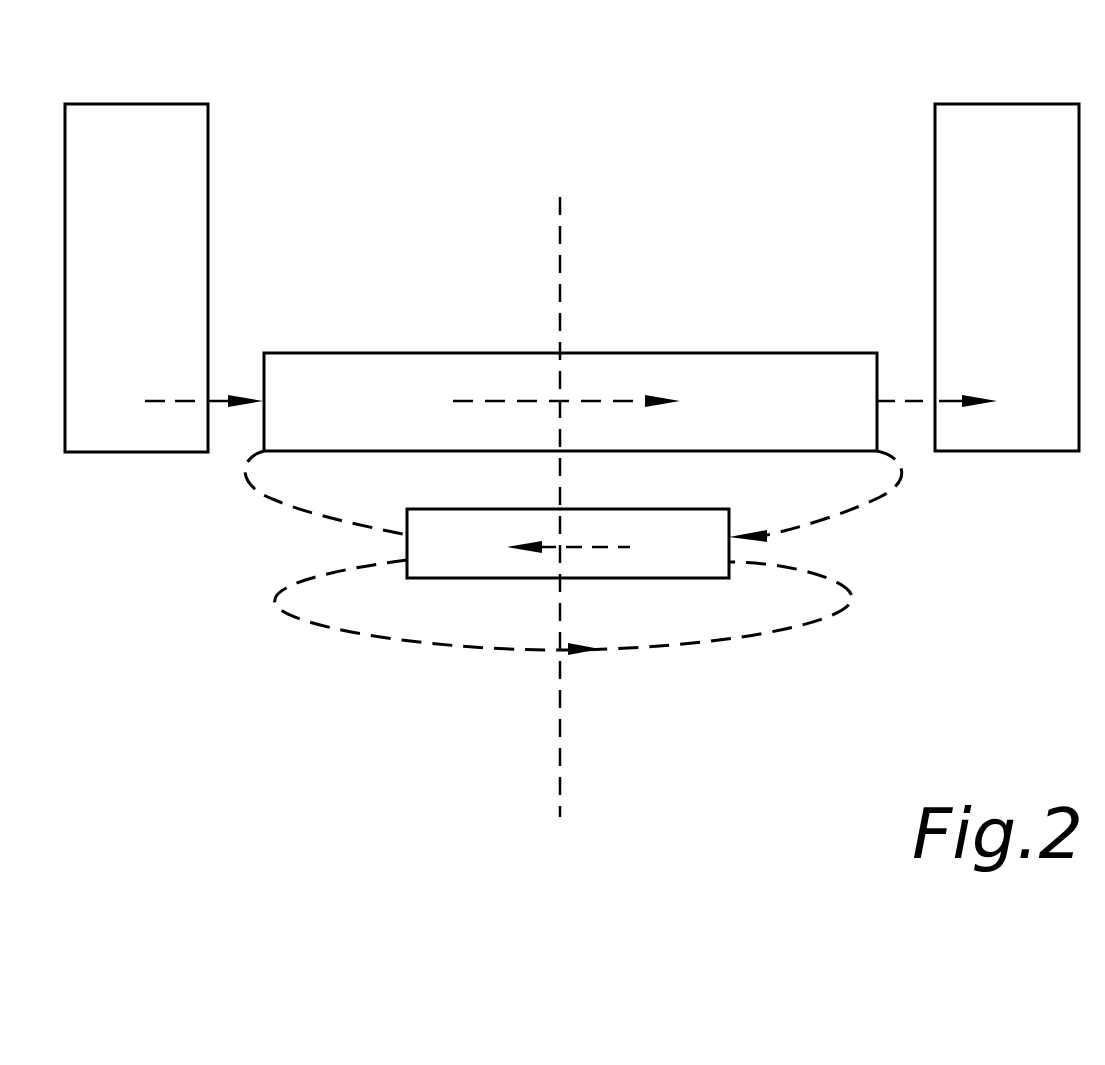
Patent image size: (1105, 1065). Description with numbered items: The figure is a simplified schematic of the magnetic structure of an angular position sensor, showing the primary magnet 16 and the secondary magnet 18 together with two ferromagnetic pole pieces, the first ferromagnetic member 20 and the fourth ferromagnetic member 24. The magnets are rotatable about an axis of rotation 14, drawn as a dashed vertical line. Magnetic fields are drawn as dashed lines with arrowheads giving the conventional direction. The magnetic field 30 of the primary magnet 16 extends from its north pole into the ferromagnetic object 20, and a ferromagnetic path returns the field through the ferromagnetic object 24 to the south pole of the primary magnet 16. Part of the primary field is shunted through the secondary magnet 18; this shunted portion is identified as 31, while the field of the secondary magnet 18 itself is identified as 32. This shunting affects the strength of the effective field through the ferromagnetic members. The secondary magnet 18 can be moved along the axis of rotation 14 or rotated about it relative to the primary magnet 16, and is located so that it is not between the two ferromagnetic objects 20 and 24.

The axis of rotation 14 is at (558, 758).
The primary magnet 16 is at (449, 371).
The secondary magnet 18 is at (647, 570).
The first ferromagnetic member 20 is at (1013, 121).
The fourth ferromagnetic member 24 is at (132, 438).
The magnetic field 30 is at (905, 400).
The shunted portion of the magnetic field 31 is at (903, 483).
The magnetic field of the secondary magnet 32 is at (378, 640).